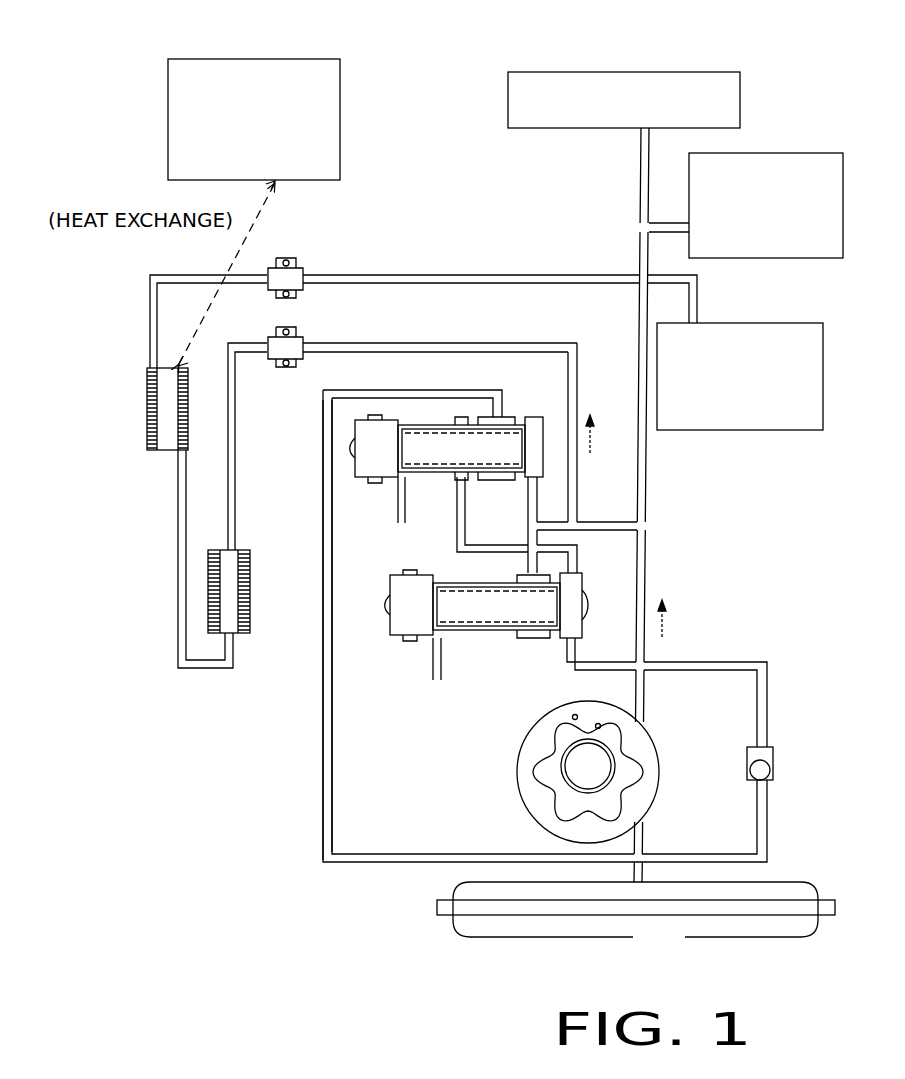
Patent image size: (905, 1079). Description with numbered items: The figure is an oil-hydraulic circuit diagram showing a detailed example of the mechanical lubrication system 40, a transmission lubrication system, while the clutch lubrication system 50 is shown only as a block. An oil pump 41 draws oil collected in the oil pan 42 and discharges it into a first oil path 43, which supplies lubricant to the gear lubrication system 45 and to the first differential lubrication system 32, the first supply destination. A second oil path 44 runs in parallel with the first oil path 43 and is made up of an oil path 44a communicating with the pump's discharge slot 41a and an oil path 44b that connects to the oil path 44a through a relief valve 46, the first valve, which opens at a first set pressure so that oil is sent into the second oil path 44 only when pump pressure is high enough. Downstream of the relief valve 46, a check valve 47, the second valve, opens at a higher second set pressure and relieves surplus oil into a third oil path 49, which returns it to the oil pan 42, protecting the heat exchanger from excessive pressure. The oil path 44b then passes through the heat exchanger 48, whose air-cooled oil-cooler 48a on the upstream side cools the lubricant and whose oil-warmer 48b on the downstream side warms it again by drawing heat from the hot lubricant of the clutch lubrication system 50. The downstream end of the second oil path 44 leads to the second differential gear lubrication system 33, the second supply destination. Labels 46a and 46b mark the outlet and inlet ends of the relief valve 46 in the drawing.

The mechanical lubrication system 40 is at (200, 856).
The oil pump 41 is at (517, 789).
The discharge slot 41a is at (645, 721).
The oil pan 42 is at (785, 882).
The first oil path 43 is at (655, 538).
The second oil path 44 is at (372, 341).
The oil path 44a is at (567, 665).
The oil path 44b is at (540, 341).
The gear lubrication system 45 is at (592, 71).
The relief valve 46 is at (448, 576).
The oil filter outlet 46a is at (582, 625).
The oil filter inlet 46b is at (517, 575).
The check valve 47 is at (447, 479).
The heat exchanger 48 is at (168, 642).
The oil-cooler 48a is at (252, 619).
The oil-warmer 48b is at (146, 420).
The third oil path 49 is at (323, 481).
The clutch lubrication system 50 is at (285, 58).
The first differential lubrication system 32 is at (760, 152).
The second differential gear lubrication system 33 is at (708, 322).